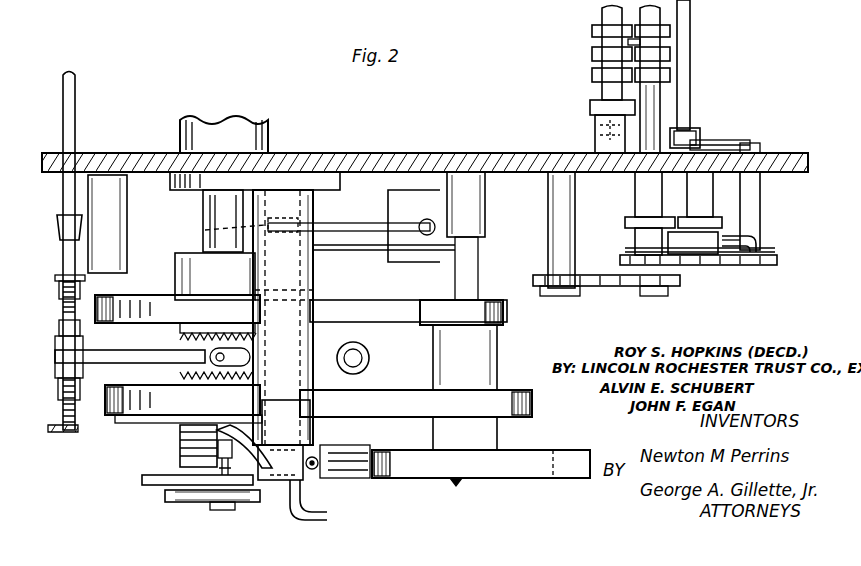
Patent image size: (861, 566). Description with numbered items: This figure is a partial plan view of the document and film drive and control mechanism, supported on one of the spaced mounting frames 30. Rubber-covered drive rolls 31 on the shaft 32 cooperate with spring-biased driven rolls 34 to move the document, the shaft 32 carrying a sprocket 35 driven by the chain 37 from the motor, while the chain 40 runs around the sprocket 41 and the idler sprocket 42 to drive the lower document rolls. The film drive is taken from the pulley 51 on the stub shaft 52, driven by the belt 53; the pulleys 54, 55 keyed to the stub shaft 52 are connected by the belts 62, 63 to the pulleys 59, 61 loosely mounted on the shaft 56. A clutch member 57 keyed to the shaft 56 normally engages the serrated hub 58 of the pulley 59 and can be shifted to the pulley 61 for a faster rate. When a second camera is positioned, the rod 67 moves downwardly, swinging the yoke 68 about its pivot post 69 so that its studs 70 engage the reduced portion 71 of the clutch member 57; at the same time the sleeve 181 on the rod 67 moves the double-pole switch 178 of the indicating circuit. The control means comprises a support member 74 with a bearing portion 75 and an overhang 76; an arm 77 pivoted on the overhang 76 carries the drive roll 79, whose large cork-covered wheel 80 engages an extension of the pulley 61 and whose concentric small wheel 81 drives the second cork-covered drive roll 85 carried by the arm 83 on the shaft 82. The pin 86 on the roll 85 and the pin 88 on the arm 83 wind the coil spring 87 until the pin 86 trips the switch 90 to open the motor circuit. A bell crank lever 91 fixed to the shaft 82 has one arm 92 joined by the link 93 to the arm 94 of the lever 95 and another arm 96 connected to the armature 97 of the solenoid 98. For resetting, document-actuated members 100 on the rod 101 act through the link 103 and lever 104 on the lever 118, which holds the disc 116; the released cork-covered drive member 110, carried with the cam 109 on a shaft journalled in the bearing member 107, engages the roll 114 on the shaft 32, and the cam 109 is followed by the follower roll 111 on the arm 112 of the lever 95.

The mounting frame 30 is at (483, 165).
The drive roll 31 is at (672, 30).
The shaft 32 is at (655, 95).
The driven roll 34 is at (592, 32).
The sprocket 35 is at (668, 268).
The chain 37 is at (770, 268).
The chain 40 is at (605, 286).
The sprocket 41 is at (665, 290).
The idler sprocket 42 is at (553, 290).
The pulley 51 is at (490, 480).
The stub shaft 52 is at (475, 275).
The belt 53 is at (560, 480).
The pulley 54 is at (503, 325).
The pulley 55 is at (510, 390).
The shaft 56 is at (212, 213).
The clutch member 57 is at (180, 345).
The serrated hub 58 is at (190, 300).
The pulley 59 is at (115, 300).
The pulley 61 is at (130, 415).
The belt 62 is at (390, 322).
The belt 63 is at (380, 412).
The rod 67 is at (60, 298).
The yoke 68 is at (130, 356).
The pivot post 69 is at (365, 363).
The stud 70 is at (185, 368).
The reduced portion 71 is at (300, 380).
The support member 74 is at (300, 270).
The bearing portion 75 is at (300, 430).
The overhang 76 is at (350, 480).
The arm 77 is at (232, 506).
The drive roll 79 is at (165, 500).
The cork-covered wheel 80 is at (200, 502).
The small wheel 81 is at (165, 490).
The shaft 82 is at (300, 290).
The arm 83 is at (178, 440).
The drive roll 85 is at (142, 480).
The pin 86 is at (192, 470).
The coil spring 87 is at (182, 460).
The pin 88 is at (180, 432).
The switch 90 is at (320, 487).
The bell crank lever 91 is at (320, 218).
The arm 92 is at (210, 233).
The link 93 is at (495, 246).
The arm 94 is at (760, 222).
The lever 95 is at (760, 246).
The arm 96 is at (360, 225).
The armature 97 is at (427, 219).
The solenoid 98 is at (415, 262).
The document-actuated member 100 is at (672, 45).
The rod 101 is at (690, 58).
The link 103 is at (695, 130).
The lever 104 is at (765, 148).
The bearing member 107 is at (760, 160).
The cam 109 is at (722, 246).
The drive member 110 is at (720, 218).
The follower roll 111 is at (645, 237).
The arm 112 is at (705, 258).
The roll 114 is at (630, 218).
The disc 116 is at (710, 142).
The lever 118 is at (730, 145).
The double-pole switch 178 is at (112, 228).
The sleeve 181 is at (57, 228).